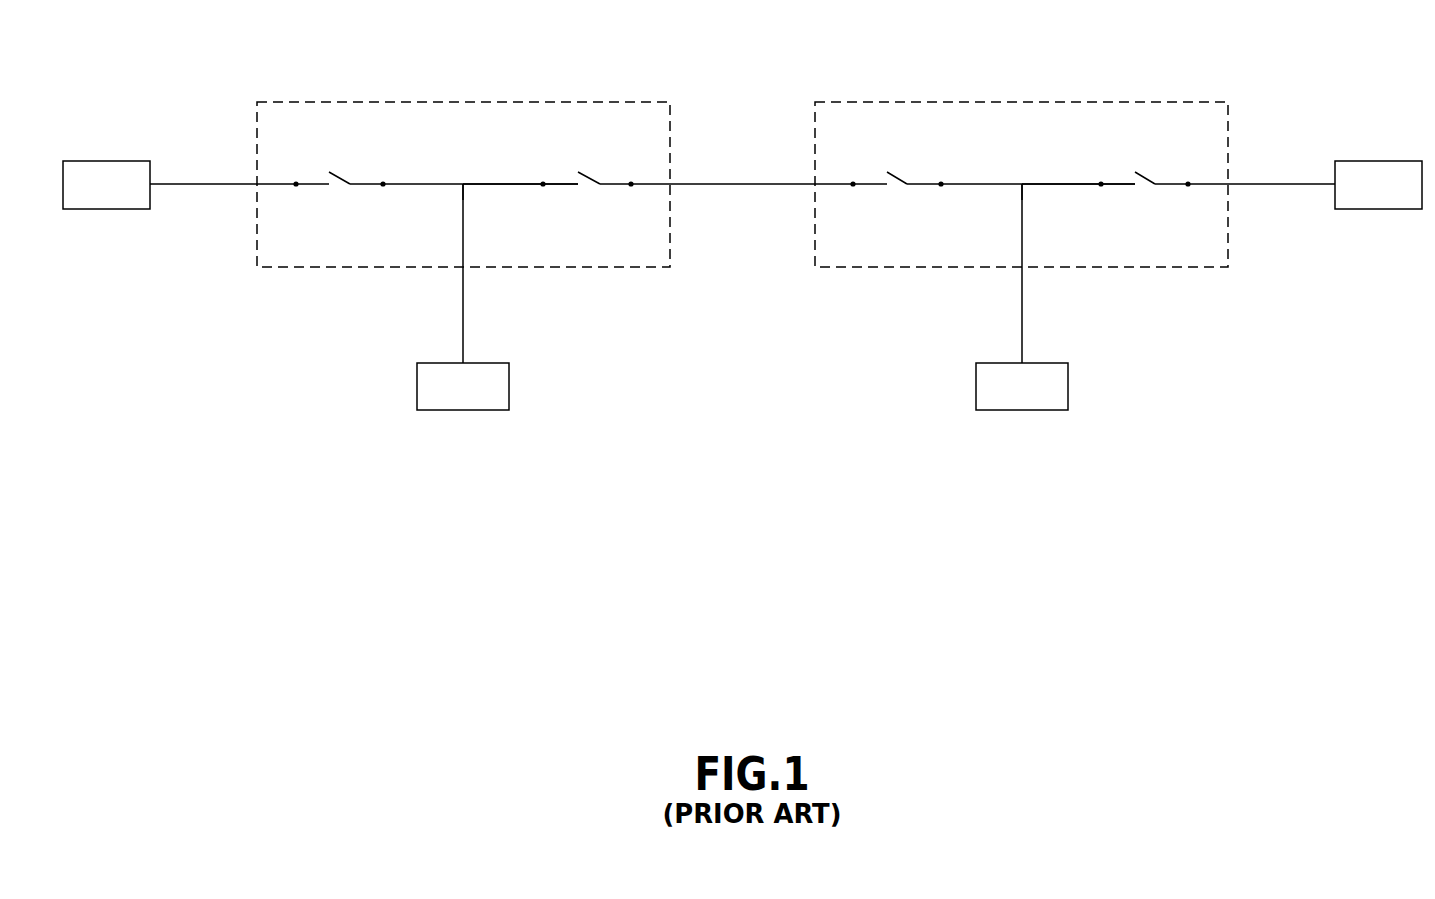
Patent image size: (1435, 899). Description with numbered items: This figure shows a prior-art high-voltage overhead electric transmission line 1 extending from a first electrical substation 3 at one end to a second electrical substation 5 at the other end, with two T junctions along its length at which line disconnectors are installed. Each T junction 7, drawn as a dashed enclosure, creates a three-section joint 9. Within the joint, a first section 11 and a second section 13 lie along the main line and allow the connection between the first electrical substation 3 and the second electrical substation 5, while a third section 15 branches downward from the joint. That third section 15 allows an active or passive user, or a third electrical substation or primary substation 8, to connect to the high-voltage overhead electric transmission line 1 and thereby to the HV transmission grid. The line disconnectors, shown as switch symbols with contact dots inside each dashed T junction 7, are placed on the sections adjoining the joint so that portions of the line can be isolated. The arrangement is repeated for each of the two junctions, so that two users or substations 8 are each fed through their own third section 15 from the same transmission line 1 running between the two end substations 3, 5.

The high-voltage overhead electric transmission line 1 is at (1232, 390).
The first electrical substation 3 is at (108, 161).
The second electrical substation 5 is at (1380, 161).
The T junction 7 is at (347, 102).
The third electrical substation or primary substation 8 is at (509, 385).
The three-section joint 9 is at (463, 184).
The first section 11 is at (223, 184).
The second section 13 is at (503, 184).
The third section 15 is at (463, 292).